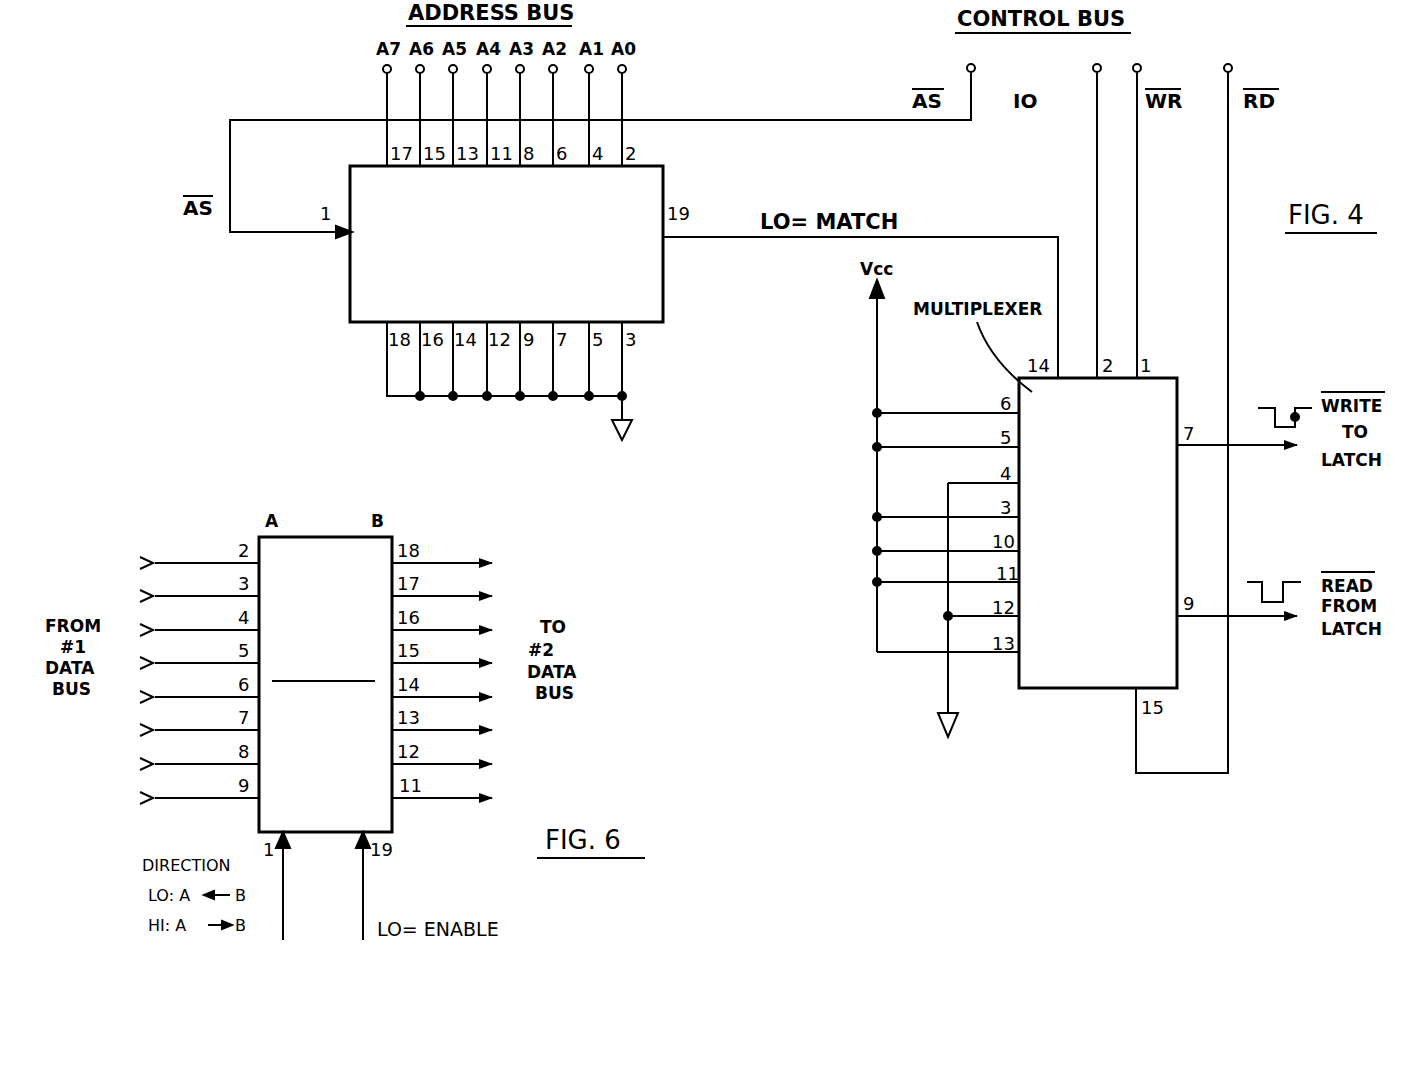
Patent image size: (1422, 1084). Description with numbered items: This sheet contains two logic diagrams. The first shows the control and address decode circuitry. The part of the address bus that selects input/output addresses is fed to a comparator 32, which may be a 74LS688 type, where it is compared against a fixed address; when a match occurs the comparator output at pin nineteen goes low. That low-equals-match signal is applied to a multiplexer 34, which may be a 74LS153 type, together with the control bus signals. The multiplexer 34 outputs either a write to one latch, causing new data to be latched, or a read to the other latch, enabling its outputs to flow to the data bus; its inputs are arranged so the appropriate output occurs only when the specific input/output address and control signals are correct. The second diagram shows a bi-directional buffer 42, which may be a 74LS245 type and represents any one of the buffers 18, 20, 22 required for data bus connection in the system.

In FIG. 4, the comparator 32 is at (640, 200).
In FIG. 4, the multiplexer 34 is at (1163, 388).
In FIG. 6, the buffer 42 is at (375, 548).
In FIG. 6, the buffer 18 is at (283, 550).
In FIG. 6, the buffer 20 is at (357, 669).
In FIG. 6, the buffer 22 is at (357, 669).